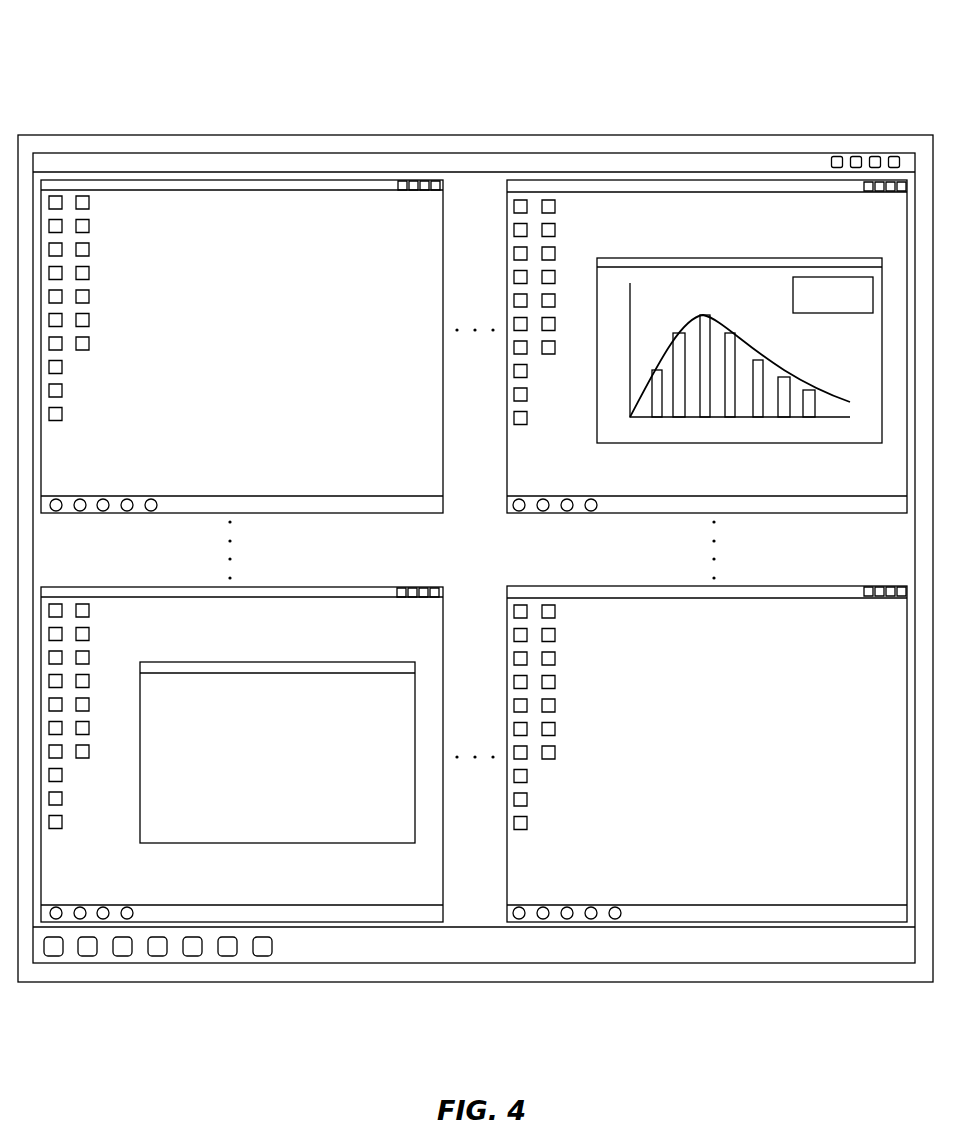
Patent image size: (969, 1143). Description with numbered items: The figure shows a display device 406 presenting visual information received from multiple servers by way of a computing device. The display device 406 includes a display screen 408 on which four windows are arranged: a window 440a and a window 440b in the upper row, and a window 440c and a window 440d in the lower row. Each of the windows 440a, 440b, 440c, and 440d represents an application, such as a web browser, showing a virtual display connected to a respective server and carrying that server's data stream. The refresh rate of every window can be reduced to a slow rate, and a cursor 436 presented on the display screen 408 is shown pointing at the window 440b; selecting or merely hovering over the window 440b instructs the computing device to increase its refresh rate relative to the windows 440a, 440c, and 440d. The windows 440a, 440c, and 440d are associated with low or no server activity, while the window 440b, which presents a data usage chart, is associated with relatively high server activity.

The display device 406 is at (108, 95).
The display screen 408 is at (488, 446).
The cursor 436 is at (596, 226).
The window 440a is at (448, 210).
The window 440b is at (505, 225).
The window 440c is at (443, 900).
The window 440d is at (507, 880).